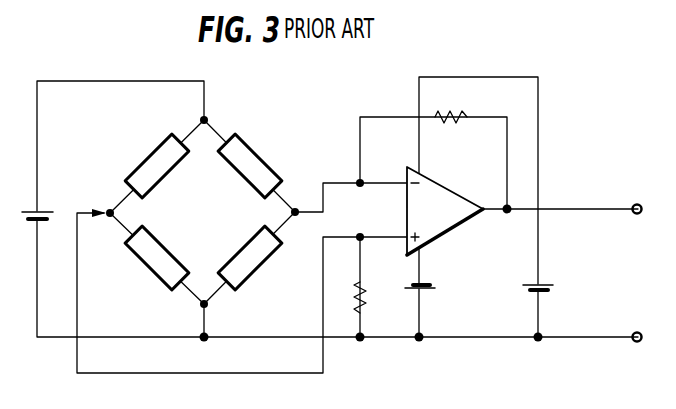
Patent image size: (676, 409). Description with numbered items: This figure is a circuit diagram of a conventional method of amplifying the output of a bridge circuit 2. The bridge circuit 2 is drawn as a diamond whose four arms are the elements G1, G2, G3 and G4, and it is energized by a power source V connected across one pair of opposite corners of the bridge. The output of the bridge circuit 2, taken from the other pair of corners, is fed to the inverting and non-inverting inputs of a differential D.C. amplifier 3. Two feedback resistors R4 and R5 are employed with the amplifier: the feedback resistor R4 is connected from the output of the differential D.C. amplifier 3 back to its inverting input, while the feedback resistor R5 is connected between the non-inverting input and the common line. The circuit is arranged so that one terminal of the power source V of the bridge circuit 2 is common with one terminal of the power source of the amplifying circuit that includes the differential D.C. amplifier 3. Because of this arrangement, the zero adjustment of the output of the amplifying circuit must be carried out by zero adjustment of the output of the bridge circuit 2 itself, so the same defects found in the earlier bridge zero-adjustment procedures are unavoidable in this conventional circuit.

The bridge circuit 2 is at (209, 224).
The differential D.C. amplifier 3 is at (440, 219).
The strain gauge G1 is at (157, 160).
The strain gauge G2 is at (148, 256).
The strain gauge G3 is at (253, 275).
The strain gauge G4 is at (257, 164).
The feedback resistor R4 is at (442, 121).
The feedback resistor R5 is at (366, 298).
The voltage source V is at (34, 199).